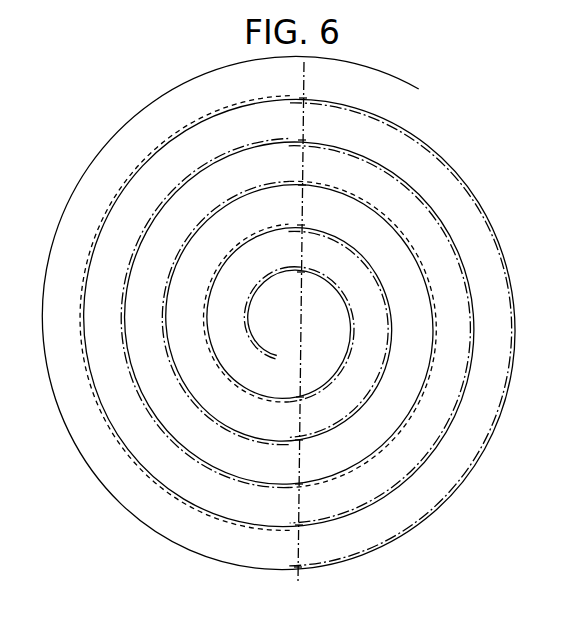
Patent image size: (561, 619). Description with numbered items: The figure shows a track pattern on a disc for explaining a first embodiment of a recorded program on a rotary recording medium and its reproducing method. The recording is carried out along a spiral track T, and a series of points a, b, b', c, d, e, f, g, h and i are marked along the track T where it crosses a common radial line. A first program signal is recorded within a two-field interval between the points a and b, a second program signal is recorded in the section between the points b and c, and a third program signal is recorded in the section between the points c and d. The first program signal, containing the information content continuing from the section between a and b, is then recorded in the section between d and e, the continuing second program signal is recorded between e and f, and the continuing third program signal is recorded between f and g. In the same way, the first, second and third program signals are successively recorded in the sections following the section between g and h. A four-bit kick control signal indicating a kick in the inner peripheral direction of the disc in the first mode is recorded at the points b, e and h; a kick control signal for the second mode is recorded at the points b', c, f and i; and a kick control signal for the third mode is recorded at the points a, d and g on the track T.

The spiral track T is at (70, 198).
The point a is at (304, 98).
The point b is at (316, 541).
The point b' is at (317, 582).
The point c is at (304, 140).
The point d is at (300, 484).
The point e is at (303, 185).
The point f is at (300, 440).
The point g is at (302, 225).
The point h is at (301, 397).
The point i is at (302, 272).